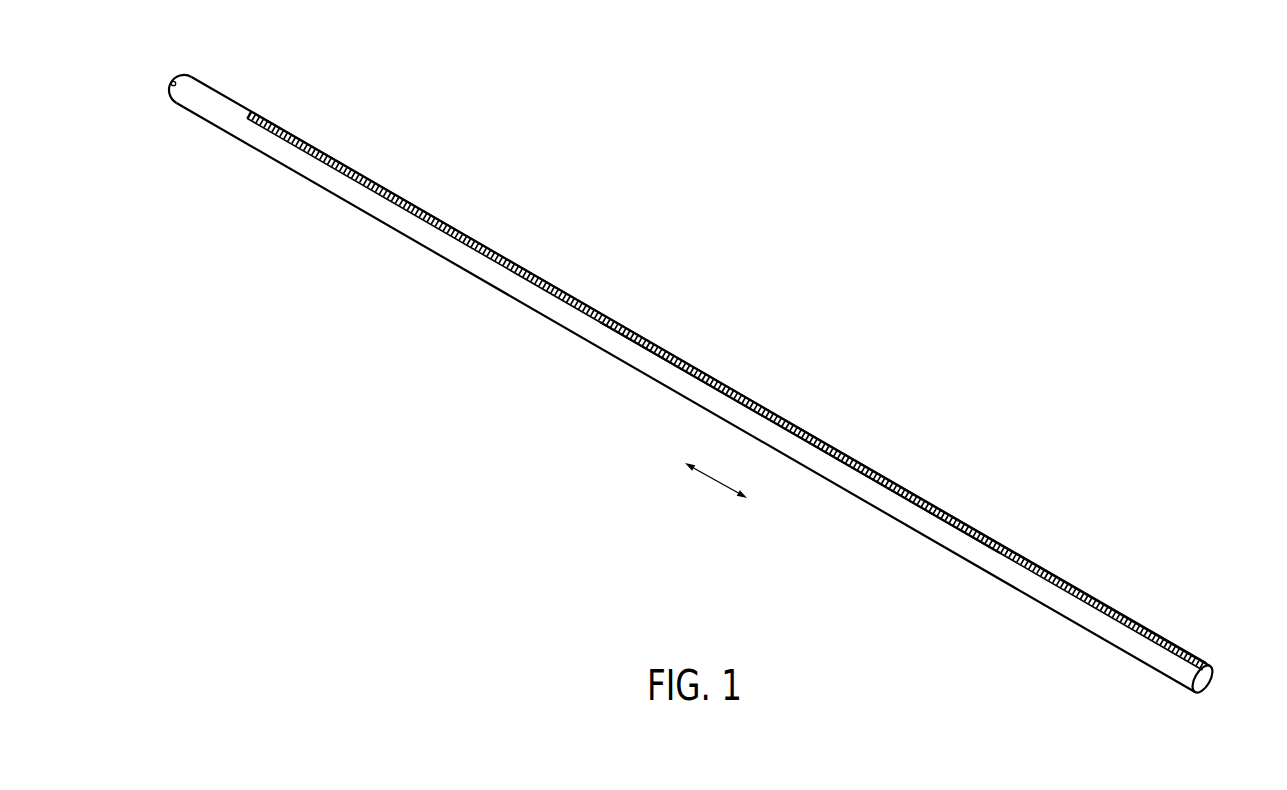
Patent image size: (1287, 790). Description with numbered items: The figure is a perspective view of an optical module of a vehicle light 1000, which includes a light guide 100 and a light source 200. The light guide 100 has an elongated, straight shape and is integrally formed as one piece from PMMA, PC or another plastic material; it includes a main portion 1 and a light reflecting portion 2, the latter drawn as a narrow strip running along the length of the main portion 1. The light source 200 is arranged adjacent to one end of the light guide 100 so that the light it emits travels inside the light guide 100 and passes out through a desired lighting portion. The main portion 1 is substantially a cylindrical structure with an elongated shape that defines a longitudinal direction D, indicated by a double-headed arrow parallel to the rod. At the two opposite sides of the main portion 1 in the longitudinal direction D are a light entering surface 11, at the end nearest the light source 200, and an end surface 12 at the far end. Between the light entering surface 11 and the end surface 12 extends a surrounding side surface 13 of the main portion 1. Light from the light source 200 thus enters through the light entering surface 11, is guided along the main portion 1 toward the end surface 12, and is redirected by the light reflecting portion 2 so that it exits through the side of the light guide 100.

The optical module of a vehicle light 1000 is at (1001, 110).
The light guide 100 is at (661, 322).
The light source 200 is at (176, 70).
The main portion 1 is at (227, 104).
The light reflecting portion 2 is at (300, 137).
The light entering surface 11 is at (162, 102).
The end surface 12 is at (1218, 678).
The surrounding side surface 13 is at (1112, 642).
The longitudinal direction D is at (716, 476).